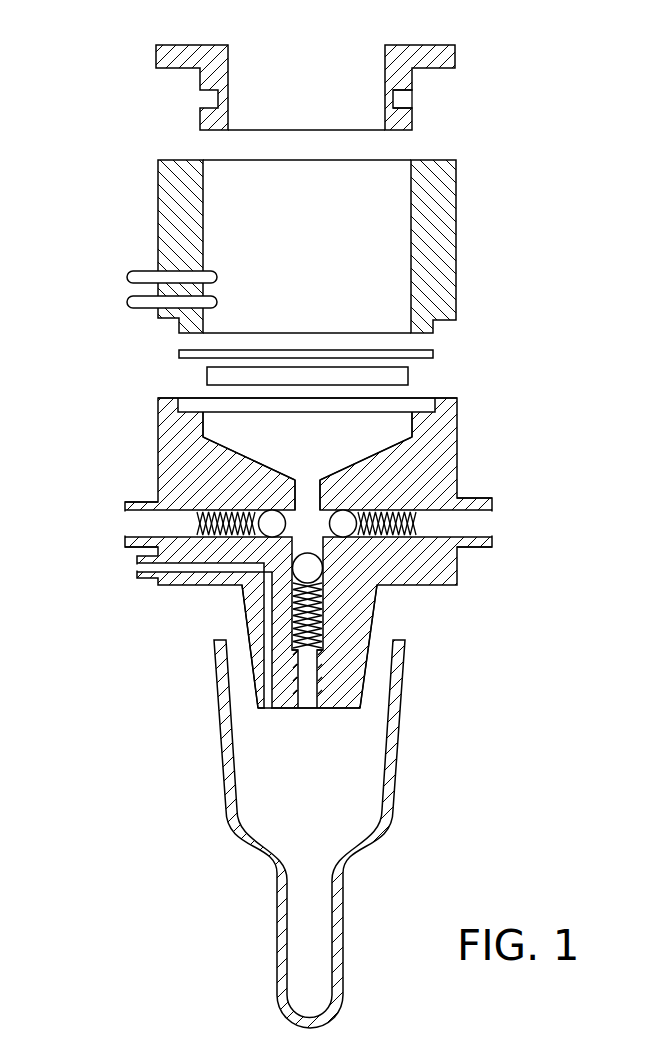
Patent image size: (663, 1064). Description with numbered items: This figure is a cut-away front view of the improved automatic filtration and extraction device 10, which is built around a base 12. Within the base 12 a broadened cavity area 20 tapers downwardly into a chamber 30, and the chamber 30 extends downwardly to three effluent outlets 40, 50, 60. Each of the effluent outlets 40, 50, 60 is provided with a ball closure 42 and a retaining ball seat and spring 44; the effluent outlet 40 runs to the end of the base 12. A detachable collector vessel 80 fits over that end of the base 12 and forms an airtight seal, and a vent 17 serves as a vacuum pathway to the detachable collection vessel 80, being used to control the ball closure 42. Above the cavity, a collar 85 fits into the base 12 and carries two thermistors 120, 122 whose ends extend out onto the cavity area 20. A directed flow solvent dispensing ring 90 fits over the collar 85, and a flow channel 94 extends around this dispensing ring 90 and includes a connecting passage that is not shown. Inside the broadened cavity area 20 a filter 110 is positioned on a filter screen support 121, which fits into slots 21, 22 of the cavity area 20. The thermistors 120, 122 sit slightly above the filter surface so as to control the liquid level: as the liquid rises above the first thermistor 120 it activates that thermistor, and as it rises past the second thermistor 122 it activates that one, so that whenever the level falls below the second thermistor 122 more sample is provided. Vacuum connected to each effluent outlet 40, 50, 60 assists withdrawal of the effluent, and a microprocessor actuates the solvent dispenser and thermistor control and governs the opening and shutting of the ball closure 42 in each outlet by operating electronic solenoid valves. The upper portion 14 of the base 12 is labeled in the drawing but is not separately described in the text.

The automatic filtration and extraction device 10 is at (478, 462).
The base 12 is at (158, 472).
The upper portion of body 14 is at (158, 414).
The vent 17 is at (262, 710).
The broadened cavity area 20 is at (360, 438).
The slot 21 is at (203, 425).
The slot 22 is at (412, 426).
The chamber 30 is at (308, 492).
The effluent outlet 40 is at (307, 697).
The ball closure 42 is at (323, 569).
The retaining ball seat and spring 44 is at (323, 613).
The effluent outlet 50 is at (483, 523).
The effluent outlet 60 is at (130, 528).
The detachable collector vessel 80 is at (395, 780).
The collar 85 is at (456, 248).
The directed flow solvent dispensing ring 90 is at (263, 44).
The flow channel 94 is at (408, 100).
The filter 110 is at (433, 352).
The thermistor 120 is at (130, 310).
The filter screen support 121 is at (408, 376).
The thermistor 122 is at (130, 270).